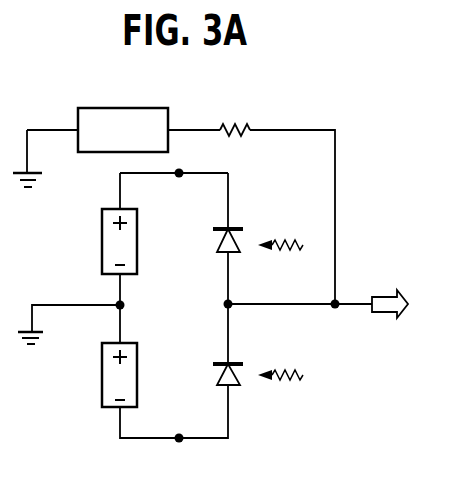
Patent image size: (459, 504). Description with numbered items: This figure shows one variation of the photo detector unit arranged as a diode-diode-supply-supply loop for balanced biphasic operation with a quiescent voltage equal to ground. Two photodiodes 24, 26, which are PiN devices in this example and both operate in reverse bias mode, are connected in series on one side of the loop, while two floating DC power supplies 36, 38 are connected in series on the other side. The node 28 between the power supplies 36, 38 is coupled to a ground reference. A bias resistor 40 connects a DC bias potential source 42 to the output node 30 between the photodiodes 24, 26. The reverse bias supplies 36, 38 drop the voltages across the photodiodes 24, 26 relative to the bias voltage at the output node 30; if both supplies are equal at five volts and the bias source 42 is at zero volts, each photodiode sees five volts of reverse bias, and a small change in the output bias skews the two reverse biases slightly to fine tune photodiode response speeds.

The DC bias potential source 42 is at (122, 108).
The bias resistor 40 is at (247, 124).
The photodiode 24 is at (237, 242).
The photodiode 26 is at (233, 388).
The floating DC power supply 36 is at (102, 242).
The floating DC power supply 38 is at (102, 397).
The node 28 is at (118, 309).
The output node 30 is at (232, 308).